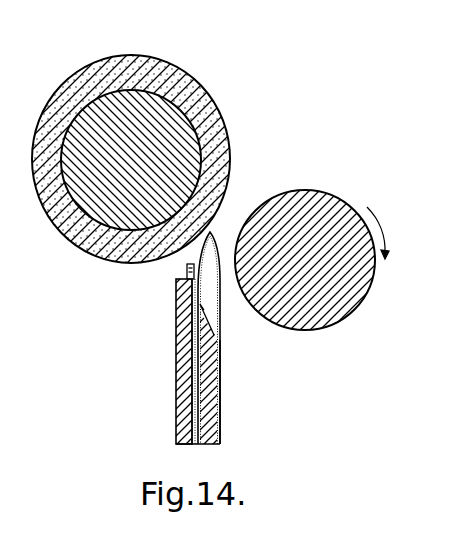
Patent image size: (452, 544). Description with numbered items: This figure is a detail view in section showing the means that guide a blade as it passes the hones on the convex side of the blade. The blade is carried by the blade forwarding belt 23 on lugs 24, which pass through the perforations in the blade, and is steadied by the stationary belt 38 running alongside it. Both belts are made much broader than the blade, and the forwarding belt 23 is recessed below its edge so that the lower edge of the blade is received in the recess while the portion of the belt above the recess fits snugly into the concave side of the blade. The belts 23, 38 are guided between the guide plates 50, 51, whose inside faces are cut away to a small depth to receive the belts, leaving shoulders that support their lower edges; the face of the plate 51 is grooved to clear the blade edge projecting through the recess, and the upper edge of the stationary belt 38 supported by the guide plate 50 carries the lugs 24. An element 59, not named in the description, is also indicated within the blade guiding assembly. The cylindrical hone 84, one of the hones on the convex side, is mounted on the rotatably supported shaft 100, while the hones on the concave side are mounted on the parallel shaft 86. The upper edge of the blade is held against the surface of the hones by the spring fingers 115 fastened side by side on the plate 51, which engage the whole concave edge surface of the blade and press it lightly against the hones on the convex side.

The hone 84 is at (167, 68).
The shaft 86 is at (187, 101).
The shaft 100 is at (338, 200).
The spring fingers 115 is at (214, 231).
The guide plate 50 is at (176, 364).
The lugs 24 is at (187, 274).
The stationary belt 38 is at (192, 446).
The blade forwarding belt 23 is at (198, 446).
The guide plate 51 is at (220, 446).
The groove 59 is at (208, 327).